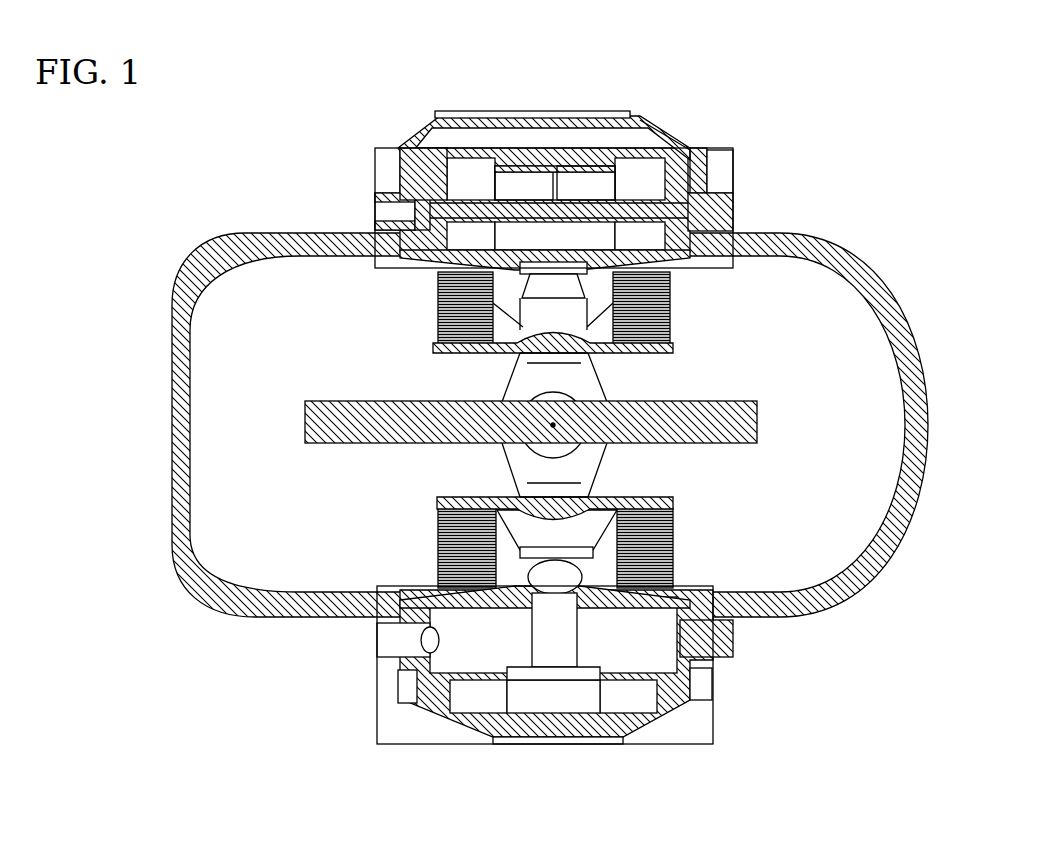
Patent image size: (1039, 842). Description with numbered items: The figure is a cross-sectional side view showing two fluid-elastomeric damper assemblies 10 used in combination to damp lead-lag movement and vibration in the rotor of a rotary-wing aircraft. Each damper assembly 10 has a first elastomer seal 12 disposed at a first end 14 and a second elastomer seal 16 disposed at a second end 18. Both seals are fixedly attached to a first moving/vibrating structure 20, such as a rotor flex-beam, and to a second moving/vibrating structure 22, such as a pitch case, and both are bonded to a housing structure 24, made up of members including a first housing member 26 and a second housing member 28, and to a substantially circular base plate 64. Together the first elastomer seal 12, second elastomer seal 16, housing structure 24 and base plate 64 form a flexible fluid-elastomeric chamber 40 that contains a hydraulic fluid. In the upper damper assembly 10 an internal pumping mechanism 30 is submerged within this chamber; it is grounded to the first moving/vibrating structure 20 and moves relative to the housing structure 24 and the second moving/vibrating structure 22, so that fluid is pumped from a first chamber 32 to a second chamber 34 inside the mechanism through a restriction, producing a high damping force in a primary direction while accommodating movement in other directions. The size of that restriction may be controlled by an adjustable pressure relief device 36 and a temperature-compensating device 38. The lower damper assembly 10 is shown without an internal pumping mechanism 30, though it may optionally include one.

The fluid-elastomeric damper assembly 10 is at (766, 150).
The first elastomer seal 12 is at (676, 333).
The first end 14 is at (385, 330).
The second elastomer seal 16 is at (503, 153).
The second end 18 is at (362, 156).
The first moving/vibrating structure 20 is at (758, 420).
The second moving/vibrating structure 22 is at (930, 420).
The housing structure 24 is at (735, 200).
The first housing member 26 is at (690, 275).
The second housing member 28 is at (618, 210).
The internal pumping mechanism 30 is at (563, 163).
The first chamber 32 is at (522, 172).
The second chamber 34 is at (608, 165).
The adjustable pressure relief device 36 is at (662, 168).
The temperature-compensating device 38 is at (467, 210).
The fluid-elastomeric chamber 40 is at (495, 279).
The substantially circular base plate 64 is at (437, 352).